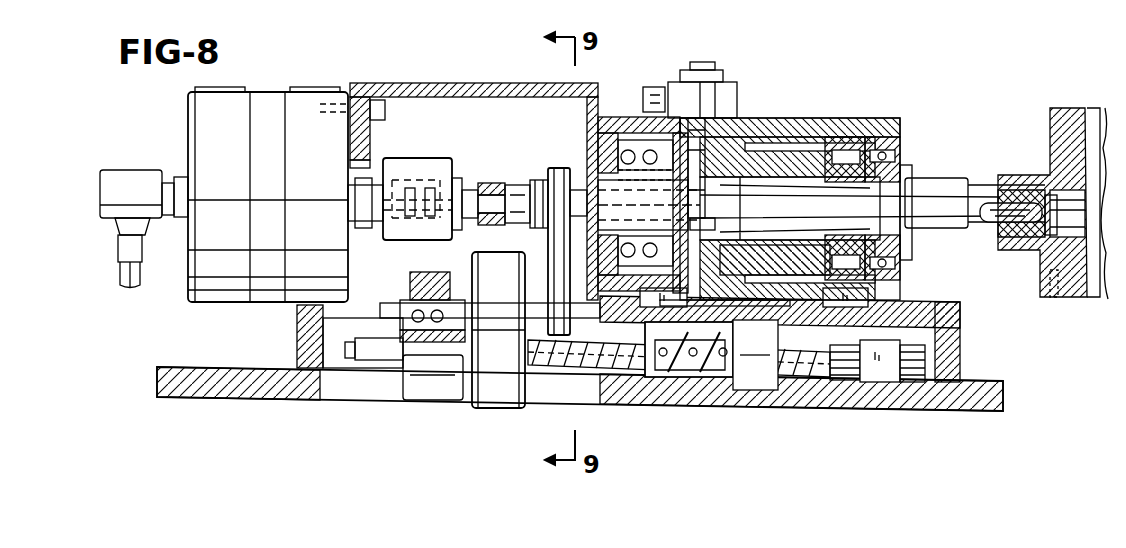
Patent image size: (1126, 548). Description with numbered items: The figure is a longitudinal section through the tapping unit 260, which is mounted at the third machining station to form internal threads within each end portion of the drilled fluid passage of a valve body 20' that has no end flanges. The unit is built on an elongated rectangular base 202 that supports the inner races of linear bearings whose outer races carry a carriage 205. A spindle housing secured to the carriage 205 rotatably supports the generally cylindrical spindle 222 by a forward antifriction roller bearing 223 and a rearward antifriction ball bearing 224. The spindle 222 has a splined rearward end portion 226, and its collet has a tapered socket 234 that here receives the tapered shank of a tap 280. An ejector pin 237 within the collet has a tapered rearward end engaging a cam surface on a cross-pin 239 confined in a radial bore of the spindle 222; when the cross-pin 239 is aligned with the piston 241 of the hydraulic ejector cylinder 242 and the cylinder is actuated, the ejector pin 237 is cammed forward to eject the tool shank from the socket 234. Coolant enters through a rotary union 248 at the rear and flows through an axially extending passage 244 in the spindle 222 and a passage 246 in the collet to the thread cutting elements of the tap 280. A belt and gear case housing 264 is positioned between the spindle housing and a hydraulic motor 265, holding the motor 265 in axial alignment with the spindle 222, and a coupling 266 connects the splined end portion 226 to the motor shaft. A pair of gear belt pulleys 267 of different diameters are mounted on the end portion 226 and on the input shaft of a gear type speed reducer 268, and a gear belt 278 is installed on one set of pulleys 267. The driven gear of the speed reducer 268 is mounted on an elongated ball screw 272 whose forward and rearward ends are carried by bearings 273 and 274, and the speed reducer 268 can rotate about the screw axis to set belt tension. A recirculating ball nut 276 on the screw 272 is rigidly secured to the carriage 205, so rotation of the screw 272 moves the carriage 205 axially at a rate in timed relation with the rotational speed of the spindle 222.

The valve body 20' is at (1053, 178).
The base 202 is at (952, 410).
The carriage 205 is at (958, 337).
The spindle 222 is at (732, 143).
The forward antifriction roller bearing 223 is at (848, 133).
The rearward antifriction ball bearing 224 is at (633, 104).
The splined rearward end portion 226 is at (518, 185).
The tapered socket 234 is at (824, 137).
The ejector pin 237 is at (775, 259).
The cross-pin 239 is at (680, 178).
The piston 241 is at (683, 136).
The hydraulic ejector cylinder 242 is at (718, 90).
The axially extending passage 244 is at (495, 190).
The passage 246 is at (770, 182).
The rotary union 248 is at (140, 153).
The tapping unit 260 is at (799, 100).
The belt and gear case housing 264 is at (475, 84).
The hydraulic motor 265 is at (198, 118).
The coupling 266 is at (425, 158).
The gear belt pulleys 267 is at (543, 185).
The gear type speed reducer 268 is at (505, 412).
The ball screw 272 is at (597, 374).
The bearing 273 is at (875, 382).
The bearing 274 is at (418, 405).
The recirculating ball nut 276 is at (720, 377).
The gear belt 278 is at (552, 252).
The tap 280 is at (990, 198).